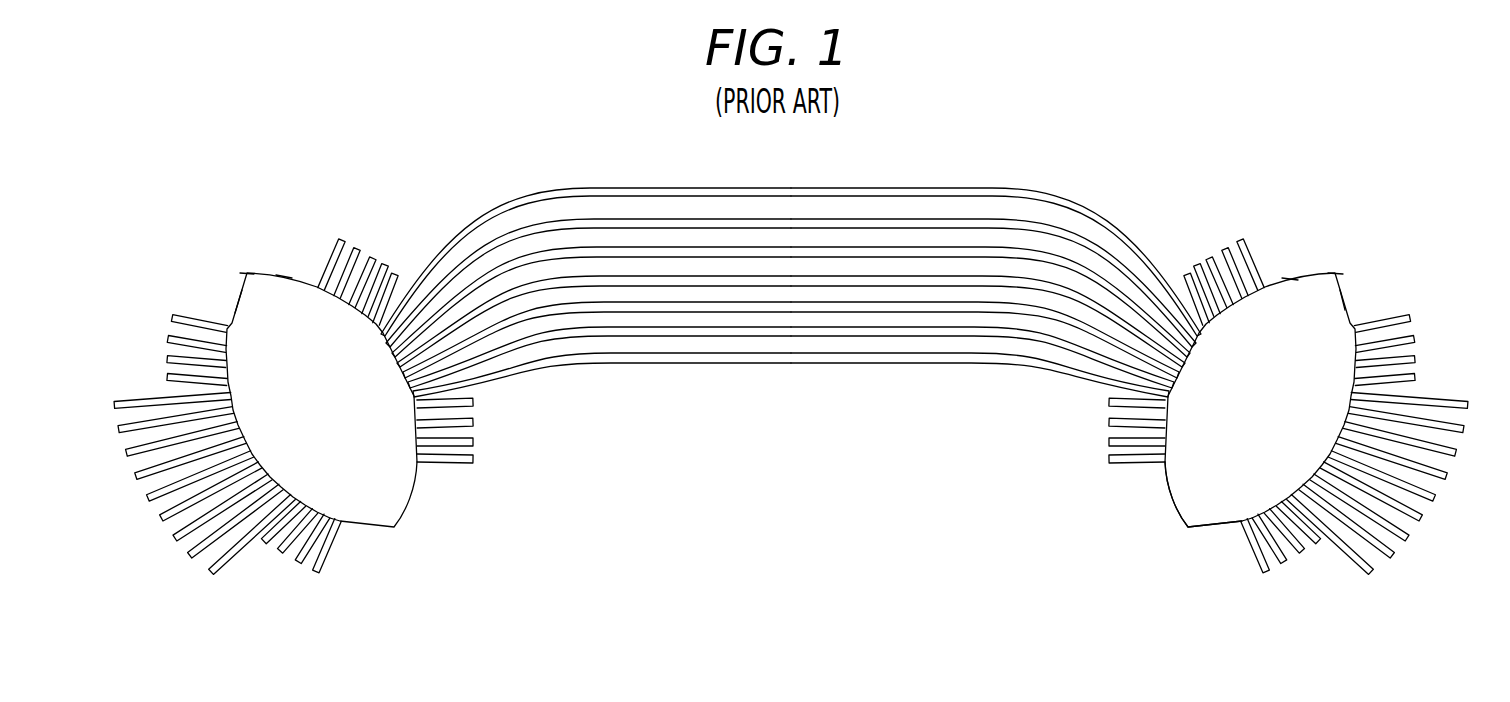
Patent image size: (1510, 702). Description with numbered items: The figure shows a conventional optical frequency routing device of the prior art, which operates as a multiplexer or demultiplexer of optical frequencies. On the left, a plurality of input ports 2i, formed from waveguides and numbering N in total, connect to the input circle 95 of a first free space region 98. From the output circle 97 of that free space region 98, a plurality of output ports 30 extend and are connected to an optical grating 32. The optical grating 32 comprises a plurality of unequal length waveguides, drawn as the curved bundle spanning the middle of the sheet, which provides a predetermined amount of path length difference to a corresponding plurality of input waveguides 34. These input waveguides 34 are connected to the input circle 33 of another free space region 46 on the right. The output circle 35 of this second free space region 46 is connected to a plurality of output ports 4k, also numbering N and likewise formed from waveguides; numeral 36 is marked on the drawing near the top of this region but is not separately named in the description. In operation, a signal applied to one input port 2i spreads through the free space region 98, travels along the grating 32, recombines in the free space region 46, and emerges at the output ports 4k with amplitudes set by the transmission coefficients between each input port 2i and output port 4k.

The input ports 2i is at (176, 538).
The output ports 4k is at (1453, 452).
The output ports 30 is at (424, 256).
The optical grating 32 is at (1007, 375).
The input circle 33 is at (1289, 279).
The input waveguides 34 is at (1225, 244).
The output circle 35 is at (1349, 292).
The pad on second chip 36 is at (1338, 273).
The free space region 46 is at (1186, 524).
The input circle 95 is at (235, 305).
The output circle 97 is at (283, 275).
The free space region 98 is at (247, 272).